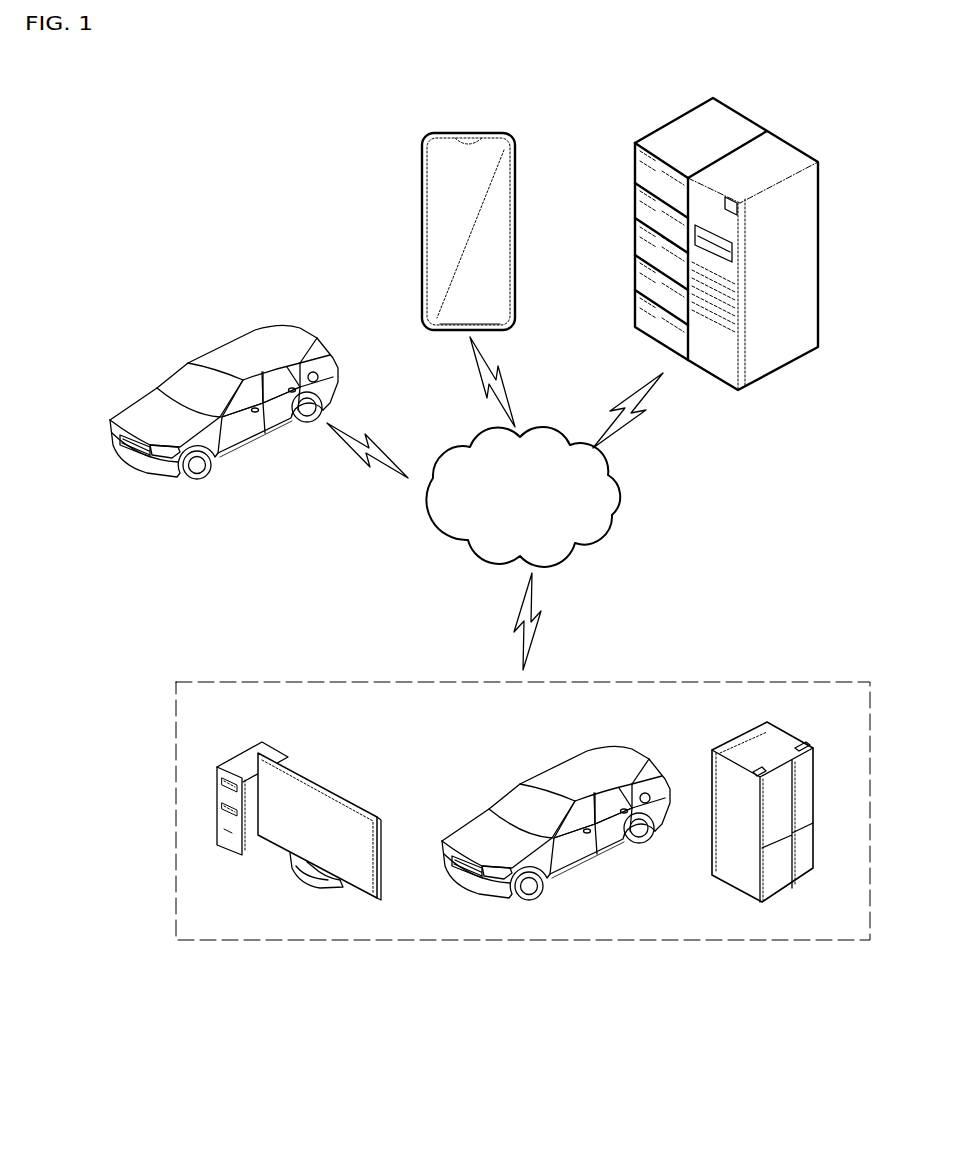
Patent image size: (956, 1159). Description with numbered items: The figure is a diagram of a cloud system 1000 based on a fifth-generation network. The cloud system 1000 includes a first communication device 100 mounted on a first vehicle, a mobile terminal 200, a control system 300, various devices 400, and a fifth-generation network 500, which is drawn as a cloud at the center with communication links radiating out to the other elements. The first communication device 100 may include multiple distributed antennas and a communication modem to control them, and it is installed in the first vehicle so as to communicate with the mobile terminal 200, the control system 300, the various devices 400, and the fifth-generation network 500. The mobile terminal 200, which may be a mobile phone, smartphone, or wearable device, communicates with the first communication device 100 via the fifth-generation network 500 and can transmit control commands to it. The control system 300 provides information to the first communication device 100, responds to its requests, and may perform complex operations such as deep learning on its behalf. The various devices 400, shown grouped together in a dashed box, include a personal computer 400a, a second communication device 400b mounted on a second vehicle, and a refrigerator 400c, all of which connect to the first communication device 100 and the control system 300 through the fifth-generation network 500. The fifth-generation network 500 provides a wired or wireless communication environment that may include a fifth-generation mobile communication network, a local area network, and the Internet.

The first communication device 100 is at (212, 362).
The mobile terminal 200 is at (495, 132).
The control system 300 is at (773, 150).
The various devices 400 is at (753, 680).
The personal computer 400a is at (310, 773).
The second communication device 400b is at (545, 778).
The refrigerator 400c is at (780, 747).
The 5G network 500 is at (533, 433).
The cloud system 1000 is at (187, 997).